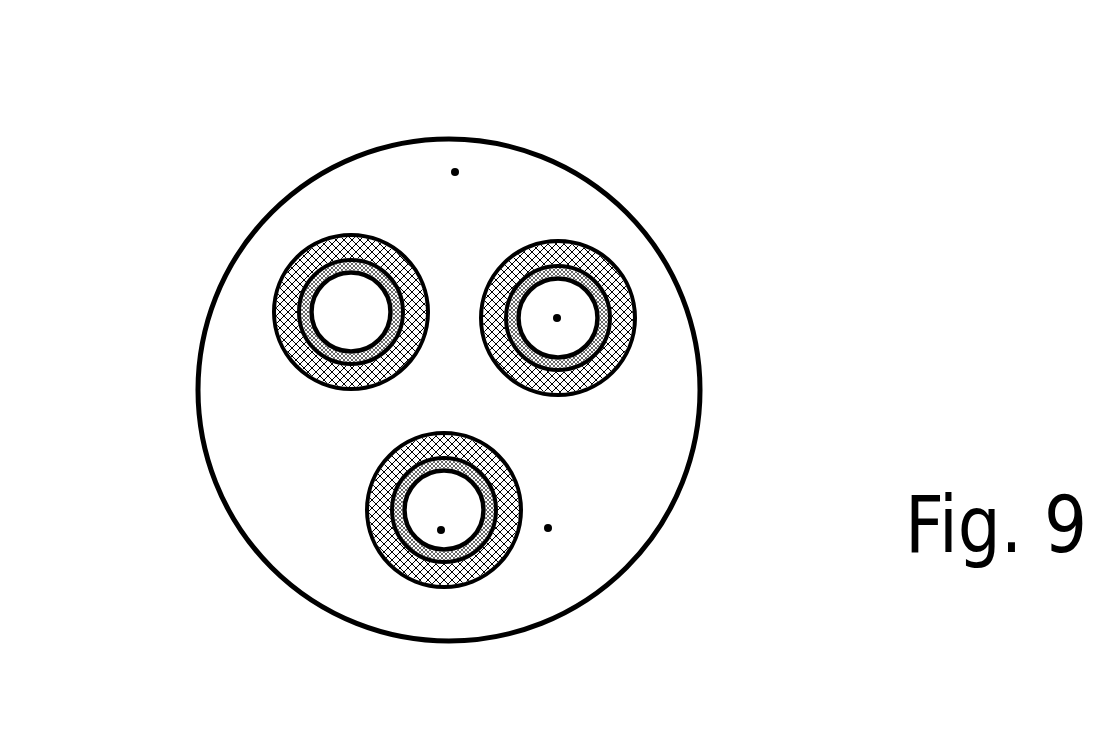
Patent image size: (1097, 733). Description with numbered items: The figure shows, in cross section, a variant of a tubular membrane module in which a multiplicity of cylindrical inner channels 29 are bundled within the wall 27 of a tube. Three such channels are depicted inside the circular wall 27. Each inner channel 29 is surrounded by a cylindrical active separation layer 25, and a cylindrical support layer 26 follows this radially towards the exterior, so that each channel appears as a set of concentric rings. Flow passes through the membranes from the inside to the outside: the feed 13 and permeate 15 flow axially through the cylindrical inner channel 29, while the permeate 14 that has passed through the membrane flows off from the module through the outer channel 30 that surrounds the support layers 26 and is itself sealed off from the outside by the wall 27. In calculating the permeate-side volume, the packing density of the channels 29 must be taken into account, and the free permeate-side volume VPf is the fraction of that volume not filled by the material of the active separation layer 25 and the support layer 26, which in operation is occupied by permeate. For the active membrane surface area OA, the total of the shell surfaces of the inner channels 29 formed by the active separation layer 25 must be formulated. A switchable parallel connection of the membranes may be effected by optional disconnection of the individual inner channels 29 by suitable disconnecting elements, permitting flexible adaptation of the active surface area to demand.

The feed 13 is at (684, 287).
The permeate 15 is at (557, 318).
The permeate 14 is at (548, 528).
The active separation layer 25 is at (310, 293).
The support layer 26 is at (323, 367).
The wall 27 is at (298, 183).
The cylindrical inner channel 29 is at (441, 530).
The annular outer channel 30 is at (620, 489).
The active membrane surface area OA is at (415, 507).
The free permeate-side volume VPf is at (455, 172).